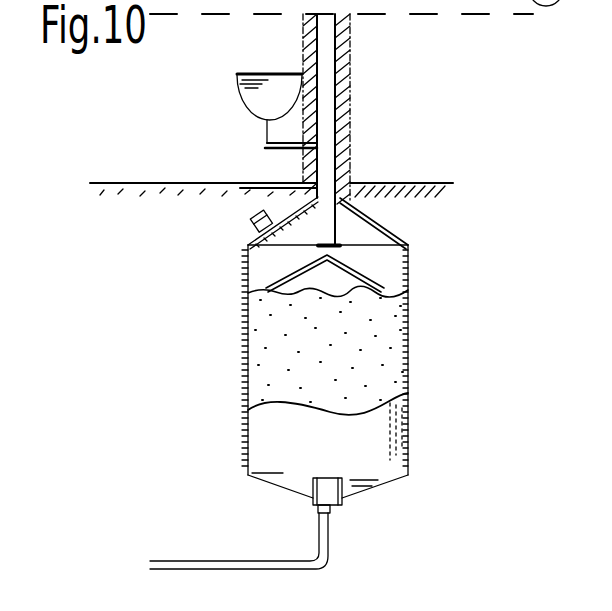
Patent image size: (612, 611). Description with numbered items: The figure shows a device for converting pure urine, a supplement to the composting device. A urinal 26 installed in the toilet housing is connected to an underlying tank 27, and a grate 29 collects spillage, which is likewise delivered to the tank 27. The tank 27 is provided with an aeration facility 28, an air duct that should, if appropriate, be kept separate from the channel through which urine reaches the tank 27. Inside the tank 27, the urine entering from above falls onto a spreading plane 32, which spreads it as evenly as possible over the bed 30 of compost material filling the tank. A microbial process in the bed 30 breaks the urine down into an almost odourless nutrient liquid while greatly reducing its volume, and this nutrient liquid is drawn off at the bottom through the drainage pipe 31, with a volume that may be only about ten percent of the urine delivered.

The urinal 26 is at (238, 88).
The tank 27 is at (410, 303).
The aeration facility 28 is at (325, 58).
The grate 29 is at (255, 183).
The bed 30 is at (272, 337).
The drainage pipe 31 is at (216, 561).
The spreading plane 32 is at (248, 247).